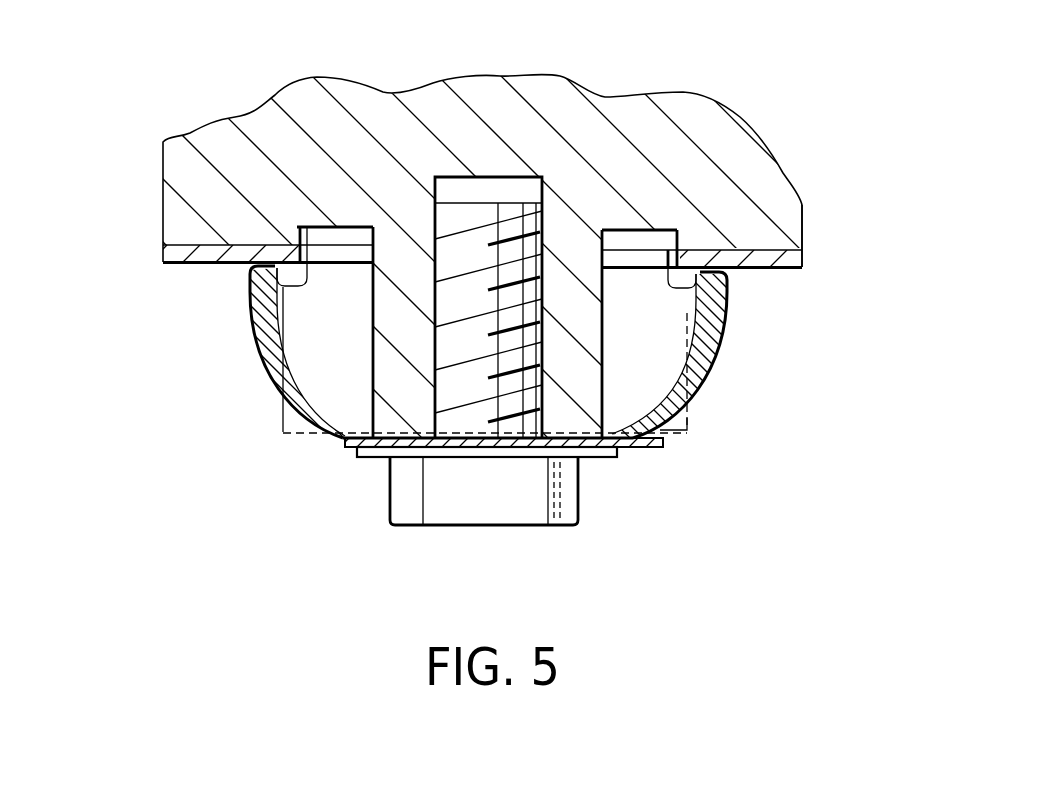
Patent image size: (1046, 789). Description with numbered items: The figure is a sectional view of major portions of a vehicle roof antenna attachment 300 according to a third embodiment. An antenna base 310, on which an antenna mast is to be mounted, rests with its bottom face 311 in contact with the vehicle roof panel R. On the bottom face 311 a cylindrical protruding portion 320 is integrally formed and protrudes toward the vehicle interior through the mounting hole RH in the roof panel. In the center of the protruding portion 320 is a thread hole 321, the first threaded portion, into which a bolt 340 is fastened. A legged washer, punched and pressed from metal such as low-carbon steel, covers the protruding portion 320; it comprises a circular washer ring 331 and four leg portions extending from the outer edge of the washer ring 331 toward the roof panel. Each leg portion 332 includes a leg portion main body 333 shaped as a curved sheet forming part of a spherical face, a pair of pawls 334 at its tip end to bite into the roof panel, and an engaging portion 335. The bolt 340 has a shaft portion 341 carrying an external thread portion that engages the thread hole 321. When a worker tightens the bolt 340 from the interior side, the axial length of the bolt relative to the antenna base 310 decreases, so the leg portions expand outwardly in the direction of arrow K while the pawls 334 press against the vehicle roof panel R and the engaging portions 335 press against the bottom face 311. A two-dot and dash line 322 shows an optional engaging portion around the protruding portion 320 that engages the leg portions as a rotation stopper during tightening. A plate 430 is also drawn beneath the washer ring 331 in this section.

The vehicle roof antenna attachment 300 is at (790, 188).
The antenna base 310 is at (797, 186).
The bottom face 311 is at (165, 258).
The protruding portion 320 is at (385, 383).
The thread hole 321 is at (512, 178).
The two-dot and dash line 322 is at (690, 434).
The washer ring 331 is at (563, 447).
The leg portion 332 is at (707, 373).
The leg portion main body 333 is at (693, 412).
The pawls 334 is at (717, 272).
The engaging portion 335 is at (650, 267).
The bolt 340 is at (498, 508).
The shaft portion 341 is at (463, 422).
The plate 430 is at (654, 432).
The mounting hole RH is at (312, 253).
The vehicle roof panel R is at (803, 264).
The arrow K is at (307, 313).